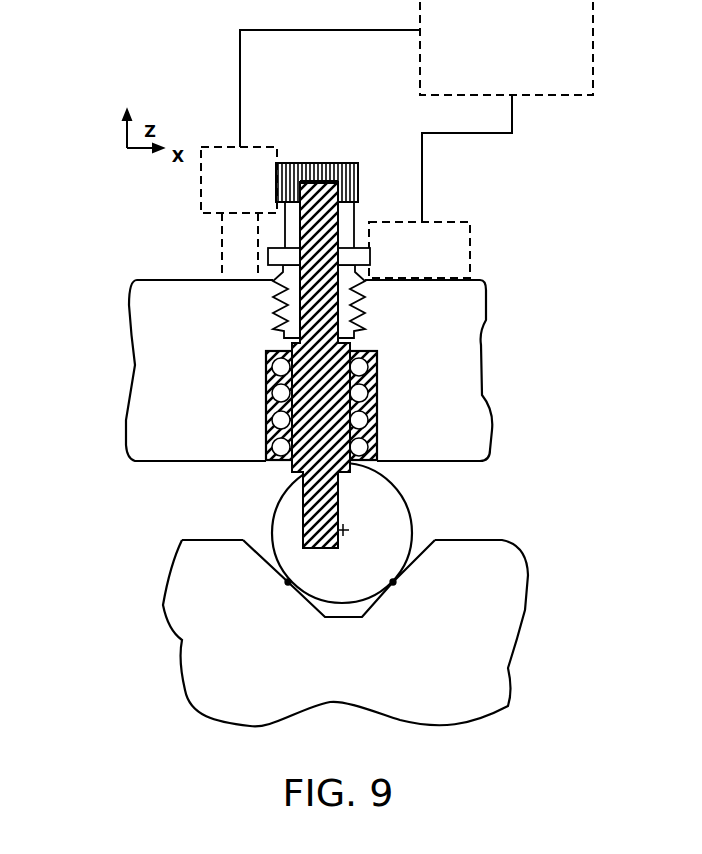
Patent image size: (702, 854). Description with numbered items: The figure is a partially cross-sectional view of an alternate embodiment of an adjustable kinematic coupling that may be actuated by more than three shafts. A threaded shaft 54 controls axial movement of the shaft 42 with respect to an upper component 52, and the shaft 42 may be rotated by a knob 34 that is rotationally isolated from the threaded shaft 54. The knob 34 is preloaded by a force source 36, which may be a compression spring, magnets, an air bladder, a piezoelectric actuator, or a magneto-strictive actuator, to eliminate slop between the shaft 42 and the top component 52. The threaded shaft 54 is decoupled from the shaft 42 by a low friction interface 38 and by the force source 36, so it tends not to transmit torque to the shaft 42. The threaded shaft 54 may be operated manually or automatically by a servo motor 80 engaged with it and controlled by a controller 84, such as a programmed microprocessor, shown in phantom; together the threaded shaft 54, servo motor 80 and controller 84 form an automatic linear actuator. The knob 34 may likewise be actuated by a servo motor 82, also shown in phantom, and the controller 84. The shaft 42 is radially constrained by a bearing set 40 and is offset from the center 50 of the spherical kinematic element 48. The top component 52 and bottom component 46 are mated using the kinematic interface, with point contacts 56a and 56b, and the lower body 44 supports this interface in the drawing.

The knob 34 is at (358, 172).
The force source 36 is at (285, 244).
The low friction interface 38 is at (282, 333).
The bearing set 40 is at (266, 380).
The shaft 42 is at (302, 505).
The lower block 44 is at (378, 605).
The bottom component 46 is at (528, 600).
The spherical kinematic element 48 is at (348, 531).
The center 50 is at (388, 482).
The upper component 52 is at (486, 328).
The threaded shaft 54 is at (268, 262).
The point contact 56a is at (286, 583).
The point contact 56b is at (395, 583).
The servo motor 80 is at (419, 250).
The servo motor 82 is at (239, 212).
The controller 84 is at (506, 48).